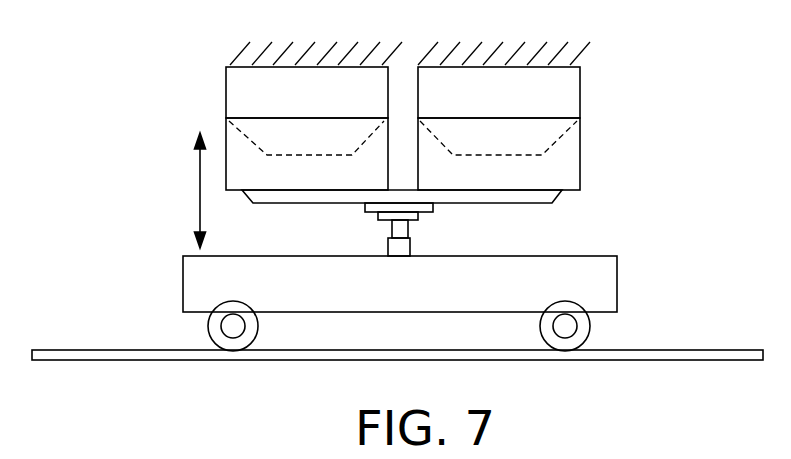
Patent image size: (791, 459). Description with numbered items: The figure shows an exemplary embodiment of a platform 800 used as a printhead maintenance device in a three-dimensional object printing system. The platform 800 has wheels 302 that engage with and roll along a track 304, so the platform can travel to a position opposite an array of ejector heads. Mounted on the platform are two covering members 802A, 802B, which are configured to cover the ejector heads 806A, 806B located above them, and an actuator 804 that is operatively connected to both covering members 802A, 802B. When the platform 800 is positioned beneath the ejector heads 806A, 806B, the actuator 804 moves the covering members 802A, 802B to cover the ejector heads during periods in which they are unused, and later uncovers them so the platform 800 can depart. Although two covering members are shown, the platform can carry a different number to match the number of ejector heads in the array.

The ejector head 806A is at (430, 42).
The ejector head 806B is at (240, 50).
The covering member 802A is at (513, 190).
The covering member 802B is at (297, 192).
The actuator 804 is at (412, 203).
The platform 800 is at (654, 275).
The wheels 302 is at (208, 327).
The track 304 is at (88, 350).